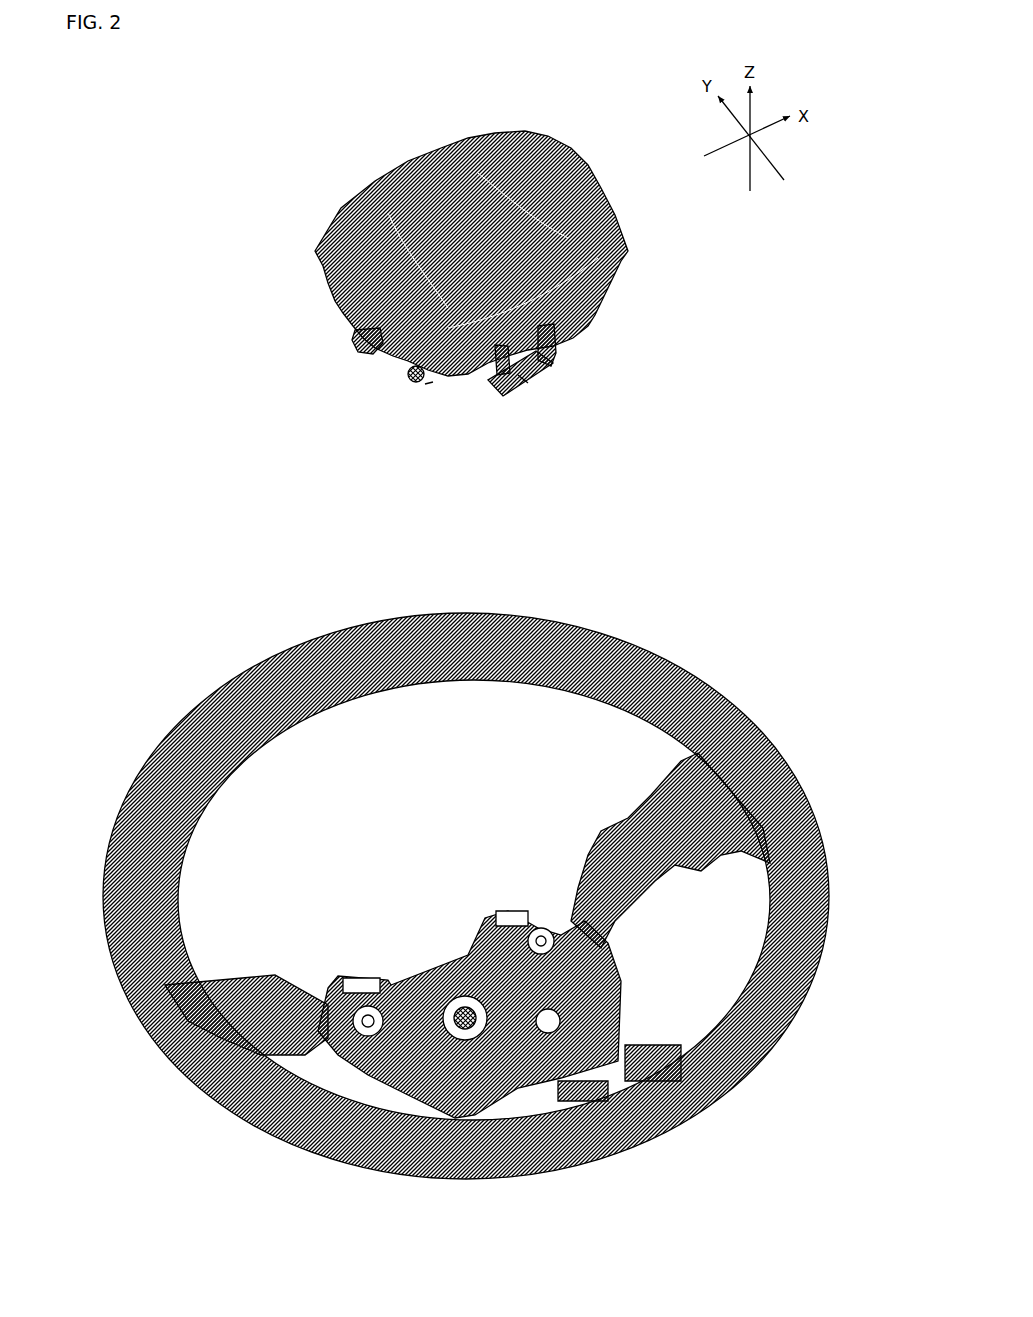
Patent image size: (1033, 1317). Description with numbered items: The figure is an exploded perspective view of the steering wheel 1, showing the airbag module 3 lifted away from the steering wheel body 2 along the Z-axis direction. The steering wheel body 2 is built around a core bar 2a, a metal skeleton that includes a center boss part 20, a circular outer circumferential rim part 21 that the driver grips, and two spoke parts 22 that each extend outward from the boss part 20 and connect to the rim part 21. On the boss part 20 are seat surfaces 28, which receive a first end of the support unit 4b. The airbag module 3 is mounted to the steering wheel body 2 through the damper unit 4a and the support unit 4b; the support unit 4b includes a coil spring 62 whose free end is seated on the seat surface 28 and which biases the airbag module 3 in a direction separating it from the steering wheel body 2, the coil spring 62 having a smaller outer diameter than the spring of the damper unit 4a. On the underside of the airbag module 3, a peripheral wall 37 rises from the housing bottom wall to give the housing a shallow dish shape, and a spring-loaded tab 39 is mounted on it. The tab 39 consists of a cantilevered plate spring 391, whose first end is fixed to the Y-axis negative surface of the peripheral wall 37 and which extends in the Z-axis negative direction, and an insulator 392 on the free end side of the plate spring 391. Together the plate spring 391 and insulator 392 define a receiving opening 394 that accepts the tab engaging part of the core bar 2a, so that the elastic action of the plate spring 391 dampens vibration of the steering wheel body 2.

The steering wheel 1 is at (802, 322).
The steering wheel body 2 is at (466, 881).
The core bar 2a is at (482, 607).
The airbag module 3 is at (425, 150).
The damper unit 4a is at (352, 338).
The support unit 4b is at (412, 382).
The boss part 20 is at (420, 962).
The rim part 21 is at (466, 868).
The spoke parts 22 is at (608, 818).
The seat surfaces 28 is at (595, 958).
The peripheral wall 37 is at (403, 373).
The spring-loaded tab 39 is at (647, 350).
The plate spring 391 is at (546, 330).
The insulator 392 is at (540, 376).
The receiving opening 394 is at (516, 372).
The coil spring 62 is at (425, 382).